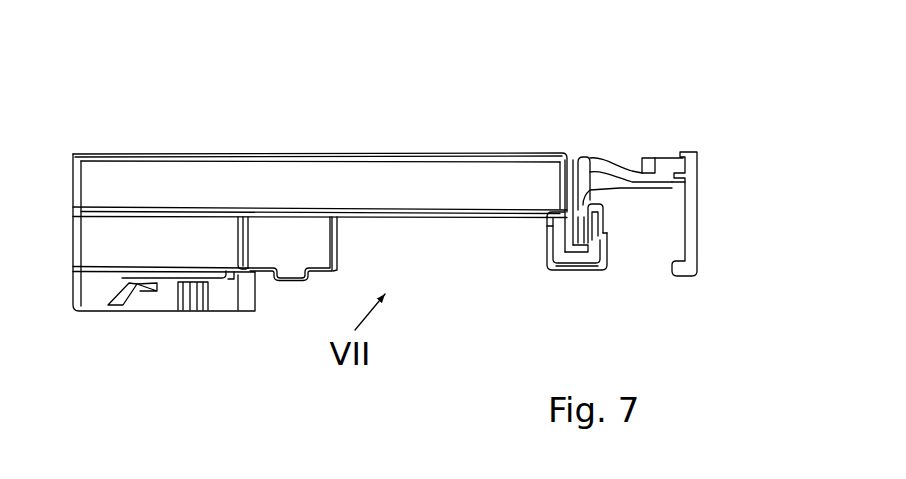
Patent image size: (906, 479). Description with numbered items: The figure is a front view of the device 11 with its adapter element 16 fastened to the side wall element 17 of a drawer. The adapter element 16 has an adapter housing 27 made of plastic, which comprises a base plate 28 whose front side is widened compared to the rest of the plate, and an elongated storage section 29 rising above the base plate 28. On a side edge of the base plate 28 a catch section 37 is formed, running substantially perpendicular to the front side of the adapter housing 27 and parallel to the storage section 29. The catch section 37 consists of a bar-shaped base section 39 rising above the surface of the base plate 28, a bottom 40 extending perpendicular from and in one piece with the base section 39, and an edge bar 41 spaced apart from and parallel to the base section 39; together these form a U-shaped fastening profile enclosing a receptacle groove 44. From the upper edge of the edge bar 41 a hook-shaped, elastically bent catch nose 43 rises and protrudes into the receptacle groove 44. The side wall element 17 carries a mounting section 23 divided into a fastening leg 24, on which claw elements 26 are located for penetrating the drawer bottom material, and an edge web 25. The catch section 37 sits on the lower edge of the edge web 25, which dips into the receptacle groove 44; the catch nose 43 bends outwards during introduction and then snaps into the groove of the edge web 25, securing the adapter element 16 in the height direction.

The device 11 is at (471, 105).
The adapter element 16 is at (269, 149).
The adapter housing 27 is at (374, 149).
The base plate 28 is at (137, 178).
The storage section 29 is at (271, 309).
The edge web 25 is at (586, 163).
The fastening leg 24 is at (624, 168).
The claw elements 26 is at (643, 160).
The catch nose 43 is at (607, 209).
The receptacle groove 44 is at (572, 250).
The base section 39 is at (552, 254).
The bottom 40 is at (578, 264).
The edge bar 41 is at (603, 249).
The catch section 37 is at (551, 282).
The mounting section 23 is at (642, 275).
The side wall element 17 is at (710, 263).